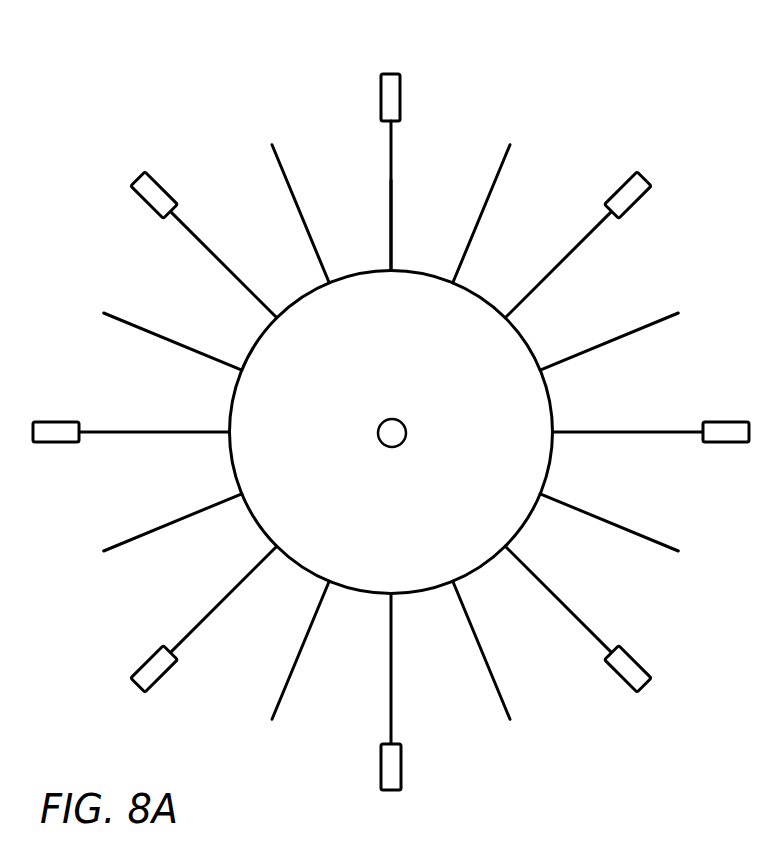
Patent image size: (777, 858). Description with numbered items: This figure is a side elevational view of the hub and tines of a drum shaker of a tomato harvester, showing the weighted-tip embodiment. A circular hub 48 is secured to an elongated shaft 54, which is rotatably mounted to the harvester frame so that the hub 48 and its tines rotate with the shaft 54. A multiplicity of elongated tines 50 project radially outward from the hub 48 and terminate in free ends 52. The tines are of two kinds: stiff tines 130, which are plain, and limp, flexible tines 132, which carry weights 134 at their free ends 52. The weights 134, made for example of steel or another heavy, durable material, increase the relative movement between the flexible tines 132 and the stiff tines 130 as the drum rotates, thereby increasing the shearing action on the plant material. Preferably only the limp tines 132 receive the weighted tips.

The hub 48 is at (485, 483).
The elongated tines 50 is at (542, 170).
The free ends 52 is at (434, 196).
The elongated shaft 54 is at (420, 416).
The stiff tines 130 is at (313, 214).
The limp tines 132 is at (426, 225).
The weights 134 is at (448, 70).